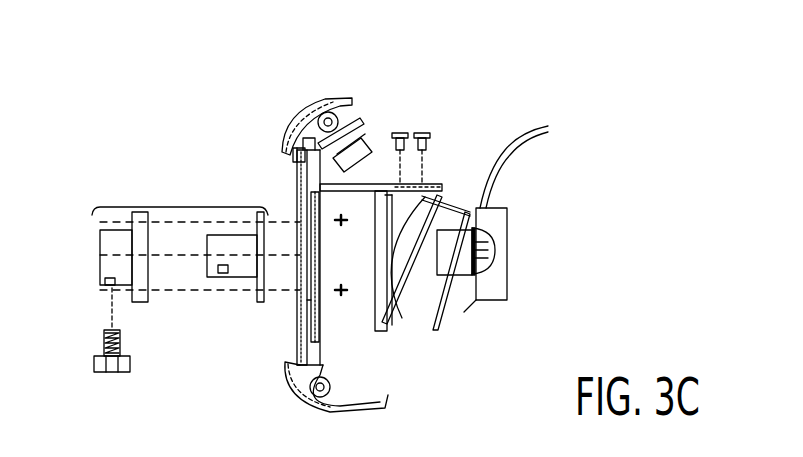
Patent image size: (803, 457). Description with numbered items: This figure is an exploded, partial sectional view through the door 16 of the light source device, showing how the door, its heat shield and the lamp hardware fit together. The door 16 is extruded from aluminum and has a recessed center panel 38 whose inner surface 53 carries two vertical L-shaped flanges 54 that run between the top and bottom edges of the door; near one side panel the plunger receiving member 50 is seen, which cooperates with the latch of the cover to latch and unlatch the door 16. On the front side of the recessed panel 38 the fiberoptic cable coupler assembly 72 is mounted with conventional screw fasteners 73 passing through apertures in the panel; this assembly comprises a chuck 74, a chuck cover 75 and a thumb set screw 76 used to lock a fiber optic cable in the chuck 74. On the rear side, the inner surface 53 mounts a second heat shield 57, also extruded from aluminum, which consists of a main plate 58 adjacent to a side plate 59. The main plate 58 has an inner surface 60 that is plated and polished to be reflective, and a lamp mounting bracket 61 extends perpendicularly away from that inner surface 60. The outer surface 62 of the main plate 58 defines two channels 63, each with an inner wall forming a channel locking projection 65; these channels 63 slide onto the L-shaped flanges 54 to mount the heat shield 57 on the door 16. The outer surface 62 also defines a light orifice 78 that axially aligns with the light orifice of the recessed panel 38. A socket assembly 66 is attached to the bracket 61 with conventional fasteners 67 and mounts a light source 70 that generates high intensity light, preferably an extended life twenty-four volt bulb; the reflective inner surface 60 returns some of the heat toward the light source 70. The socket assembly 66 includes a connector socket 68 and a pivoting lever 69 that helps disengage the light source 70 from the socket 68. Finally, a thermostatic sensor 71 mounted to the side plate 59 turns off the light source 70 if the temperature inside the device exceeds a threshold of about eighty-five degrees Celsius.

The door 16 is at (345, 108).
The recessed center panel 38 is at (295, 162).
The plunger receiving member 50 is at (330, 388).
The inner surface 53 is at (321, 318).
The L-shaped flanges 54 is at (282, 125).
The second heat shield 57 is at (303, 303).
The main plate 58 is at (322, 205).
The side plate 59 is at (355, 135).
The inner surface 60 is at (344, 292).
The lamp mounting bracket 61 is at (385, 180).
The outer surface 62 is at (300, 170).
The channels 63 is at (288, 150).
The channel locking projection 65 is at (300, 157).
The socket assembly 66 is at (461, 185).
The fasteners 67 is at (400, 130).
The connector socket 68 is at (507, 295).
The pivoting lever 69 is at (448, 330).
The light source 70 is at (405, 330).
The thermostatic sensor 71 is at (364, 122).
The fiberoptic cable coupler assembly 72 is at (196, 230).
The fasteners 73 is at (347, 222).
The chuck 74 is at (210, 290).
The chuck cover 75 is at (100, 262).
The thumb set screw 76 is at (112, 380).
The light orifice 78 is at (319, 255).